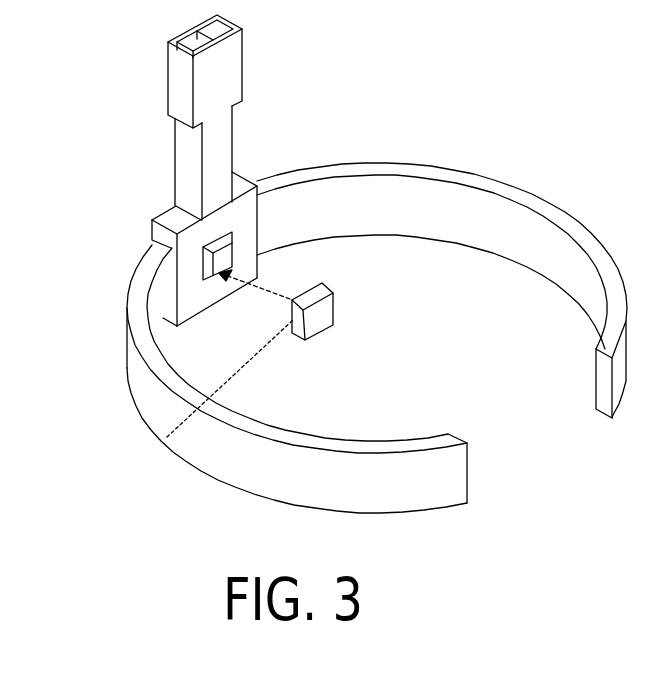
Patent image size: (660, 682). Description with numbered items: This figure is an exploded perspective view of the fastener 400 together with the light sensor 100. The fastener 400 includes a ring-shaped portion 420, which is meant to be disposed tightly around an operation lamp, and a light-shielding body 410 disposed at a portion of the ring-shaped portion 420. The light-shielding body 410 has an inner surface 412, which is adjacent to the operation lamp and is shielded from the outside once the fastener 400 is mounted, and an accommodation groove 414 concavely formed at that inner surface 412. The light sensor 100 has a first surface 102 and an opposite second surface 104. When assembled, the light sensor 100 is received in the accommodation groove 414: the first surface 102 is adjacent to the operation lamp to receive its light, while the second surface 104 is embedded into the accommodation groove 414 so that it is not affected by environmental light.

The fastener 400 is at (373, 163).
The ring-shaped portion 420 is at (533, 195).
The light-shielding body 410 is at (163, 213).
The inner surface 412 is at (246, 268).
The accommodation groove 414 is at (243, 297).
The light sensor 100 is at (336, 294).
The first surface 102 is at (322, 322).
The second surface 104 is at (167, 437).